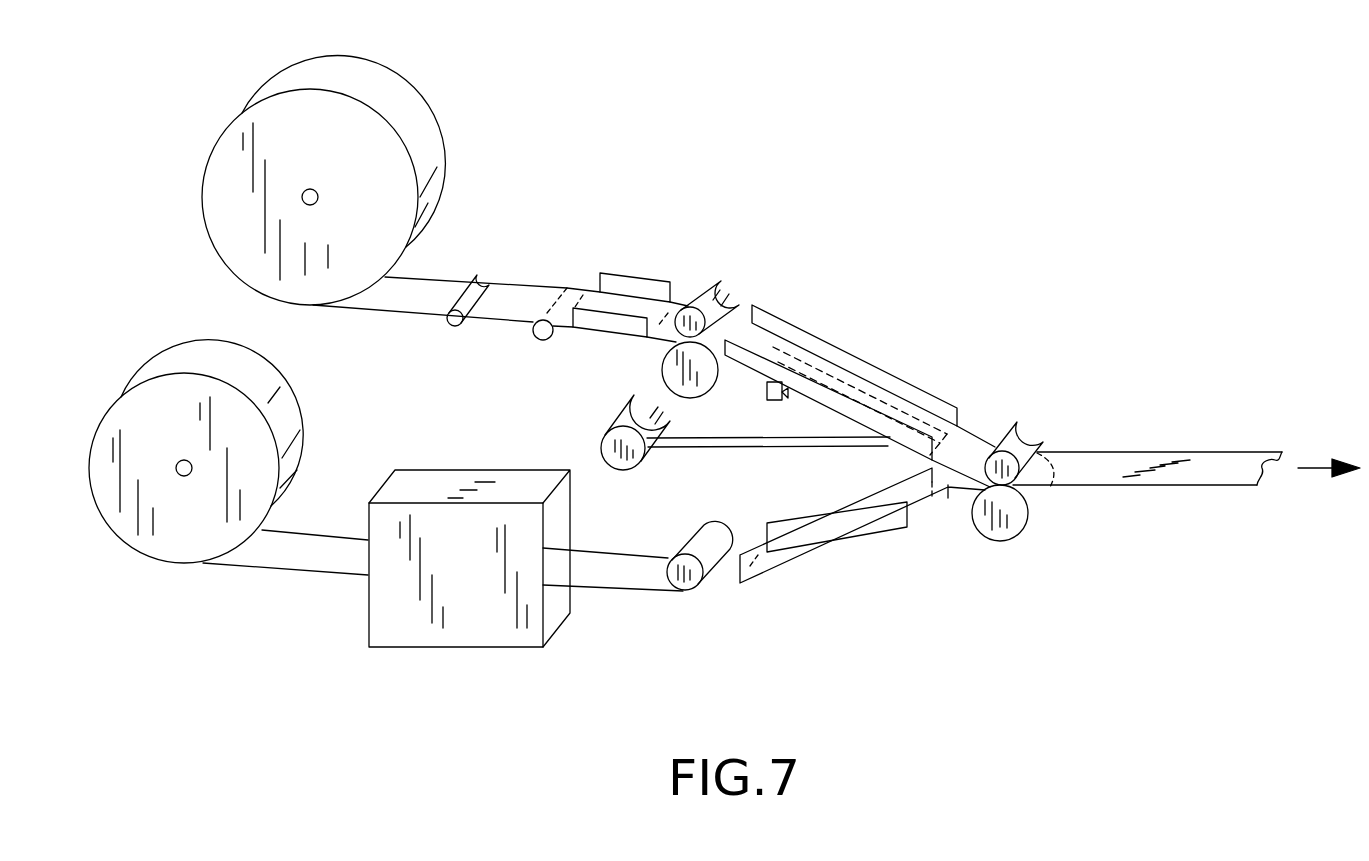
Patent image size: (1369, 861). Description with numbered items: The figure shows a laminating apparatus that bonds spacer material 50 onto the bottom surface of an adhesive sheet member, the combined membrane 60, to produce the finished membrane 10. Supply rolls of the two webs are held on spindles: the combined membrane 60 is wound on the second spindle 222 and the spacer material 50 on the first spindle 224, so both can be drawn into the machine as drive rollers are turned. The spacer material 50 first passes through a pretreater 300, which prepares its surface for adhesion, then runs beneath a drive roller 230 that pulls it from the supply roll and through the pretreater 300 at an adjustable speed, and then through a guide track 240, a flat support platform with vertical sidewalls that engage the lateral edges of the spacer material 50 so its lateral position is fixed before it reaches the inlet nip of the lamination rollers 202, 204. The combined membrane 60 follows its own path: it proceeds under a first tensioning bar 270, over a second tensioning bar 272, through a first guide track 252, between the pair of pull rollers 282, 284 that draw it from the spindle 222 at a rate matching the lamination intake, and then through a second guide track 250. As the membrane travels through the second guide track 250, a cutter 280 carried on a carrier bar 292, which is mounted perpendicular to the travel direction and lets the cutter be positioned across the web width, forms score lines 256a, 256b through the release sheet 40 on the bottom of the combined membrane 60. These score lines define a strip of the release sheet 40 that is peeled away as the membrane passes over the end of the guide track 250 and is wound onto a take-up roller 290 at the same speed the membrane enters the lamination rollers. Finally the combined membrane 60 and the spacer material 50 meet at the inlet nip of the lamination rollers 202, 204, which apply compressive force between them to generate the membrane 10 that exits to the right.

The membrane 10 is at (1205, 463).
The release sheet 40 is at (678, 447).
The spacer material 50 is at (727, 575).
The combined membrane 60 is at (442, 295).
The lamination roller 202 is at (1032, 435).
The lamination roller 204 is at (1017, 522).
The second spindle 222 is at (320, 194).
The first spindle 224 is at (188, 476).
The drive roller 230 is at (693, 574).
The guide track 240 is at (852, 537).
The second guide track 250 is at (940, 393).
The first guide track 252 is at (665, 283).
The score line 256a is at (802, 360).
The score line 256b is at (828, 380).
The first tensioning bar 270 is at (495, 278).
The second tensioning bar 272 is at (581, 287).
The cutter 280 is at (763, 388).
The pull roller 282 is at (717, 270).
The pull roller 284 is at (667, 363).
The take-up roller 290 is at (603, 440).
The carrier bar 292 is at (775, 400).
The pretreater 300 is at (462, 623).